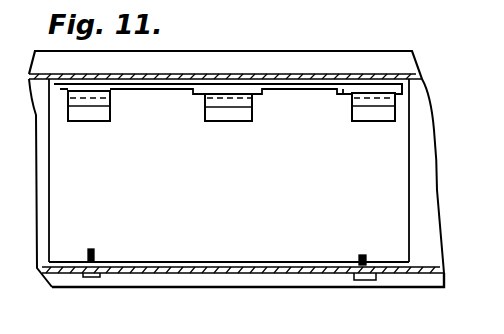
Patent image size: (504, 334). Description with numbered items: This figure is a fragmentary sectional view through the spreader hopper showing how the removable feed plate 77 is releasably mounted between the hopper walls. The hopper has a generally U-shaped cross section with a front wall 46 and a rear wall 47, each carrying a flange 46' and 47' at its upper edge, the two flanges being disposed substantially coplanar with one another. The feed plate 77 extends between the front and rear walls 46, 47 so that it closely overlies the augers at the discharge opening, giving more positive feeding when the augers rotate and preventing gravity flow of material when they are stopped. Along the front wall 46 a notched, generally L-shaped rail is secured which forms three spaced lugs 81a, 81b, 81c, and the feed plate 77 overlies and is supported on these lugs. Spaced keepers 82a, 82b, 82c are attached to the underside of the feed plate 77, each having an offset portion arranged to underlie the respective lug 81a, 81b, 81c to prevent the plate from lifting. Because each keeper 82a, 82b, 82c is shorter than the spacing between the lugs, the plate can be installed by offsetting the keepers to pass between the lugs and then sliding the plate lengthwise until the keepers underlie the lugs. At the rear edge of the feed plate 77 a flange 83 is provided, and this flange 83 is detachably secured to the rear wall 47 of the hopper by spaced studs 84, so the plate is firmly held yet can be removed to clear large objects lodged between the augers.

The flange 46' is at (225, 52).
The front wall 46 is at (225, 67).
The feed plate 77 is at (386, 178).
The lug 81a is at (118, 88).
The lug 81b is at (264, 92).
The lug 81c is at (342, 90).
The keeper 82a is at (80, 112).
The keeper 82b is at (221, 113).
The keeper 82c is at (373, 113).
The flange 83 is at (166, 262).
The stud 84 is at (93, 249).
The rear wall 47 is at (243, 255).
The flange 47' is at (248, 259).